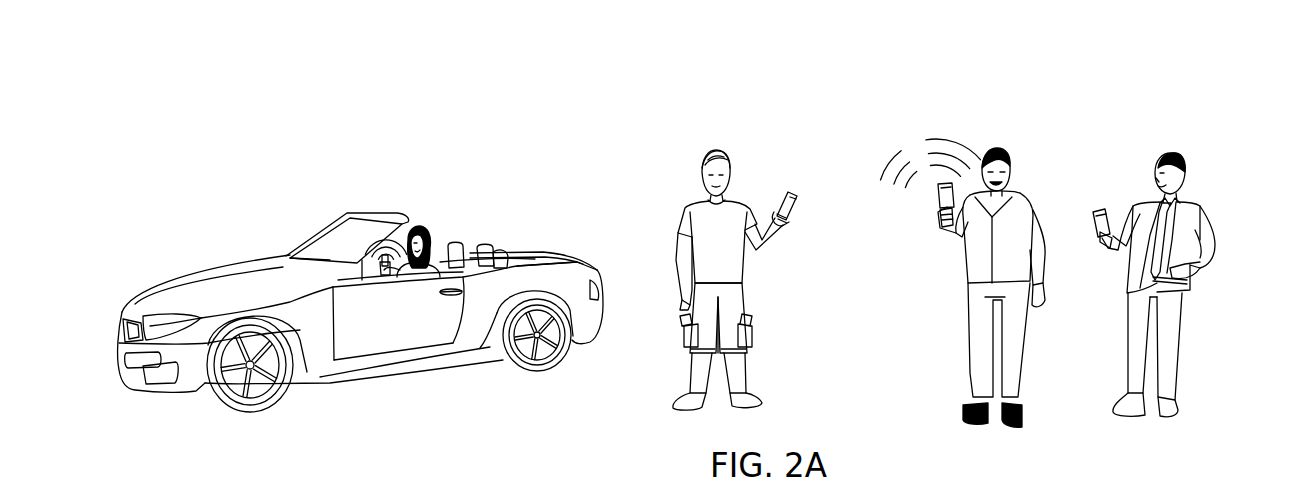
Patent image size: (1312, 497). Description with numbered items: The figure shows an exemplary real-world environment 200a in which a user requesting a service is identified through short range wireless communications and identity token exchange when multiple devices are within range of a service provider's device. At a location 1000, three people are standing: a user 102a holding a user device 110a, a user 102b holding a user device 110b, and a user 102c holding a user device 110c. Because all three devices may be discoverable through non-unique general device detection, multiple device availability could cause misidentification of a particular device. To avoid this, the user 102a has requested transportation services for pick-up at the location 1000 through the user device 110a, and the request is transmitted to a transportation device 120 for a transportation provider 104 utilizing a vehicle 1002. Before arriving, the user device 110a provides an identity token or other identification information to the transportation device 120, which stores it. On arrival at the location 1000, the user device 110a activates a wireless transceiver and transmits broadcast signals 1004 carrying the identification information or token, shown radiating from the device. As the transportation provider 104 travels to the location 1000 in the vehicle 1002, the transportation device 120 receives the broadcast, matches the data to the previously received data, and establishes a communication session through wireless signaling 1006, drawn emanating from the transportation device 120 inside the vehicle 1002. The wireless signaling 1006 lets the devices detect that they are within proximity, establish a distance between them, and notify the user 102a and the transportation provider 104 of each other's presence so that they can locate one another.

The location 1000 is at (797, 53).
The environment 200a is at (1282, 42).
The vehicle 1002 is at (170, 283).
The transportation provider 104 is at (430, 240).
The transportation device 120 is at (378, 266).
The wireless signaling 1006 is at (384, 240).
The user 102a is at (994, 150).
The user 102b is at (717, 150).
The user 102c is at (1170, 155).
The user device 110a is at (940, 202).
The user device 110b is at (792, 192).
The user device 110c is at (1100, 209).
The broadcast signals 1004 is at (957, 120).